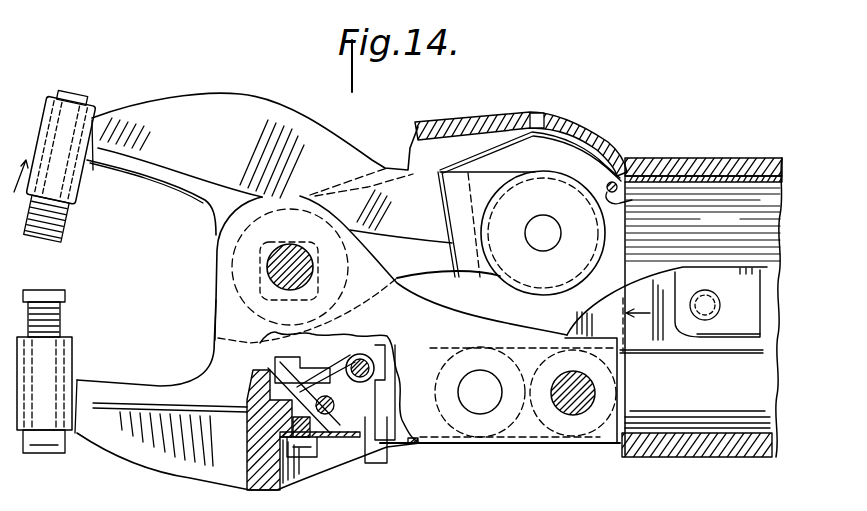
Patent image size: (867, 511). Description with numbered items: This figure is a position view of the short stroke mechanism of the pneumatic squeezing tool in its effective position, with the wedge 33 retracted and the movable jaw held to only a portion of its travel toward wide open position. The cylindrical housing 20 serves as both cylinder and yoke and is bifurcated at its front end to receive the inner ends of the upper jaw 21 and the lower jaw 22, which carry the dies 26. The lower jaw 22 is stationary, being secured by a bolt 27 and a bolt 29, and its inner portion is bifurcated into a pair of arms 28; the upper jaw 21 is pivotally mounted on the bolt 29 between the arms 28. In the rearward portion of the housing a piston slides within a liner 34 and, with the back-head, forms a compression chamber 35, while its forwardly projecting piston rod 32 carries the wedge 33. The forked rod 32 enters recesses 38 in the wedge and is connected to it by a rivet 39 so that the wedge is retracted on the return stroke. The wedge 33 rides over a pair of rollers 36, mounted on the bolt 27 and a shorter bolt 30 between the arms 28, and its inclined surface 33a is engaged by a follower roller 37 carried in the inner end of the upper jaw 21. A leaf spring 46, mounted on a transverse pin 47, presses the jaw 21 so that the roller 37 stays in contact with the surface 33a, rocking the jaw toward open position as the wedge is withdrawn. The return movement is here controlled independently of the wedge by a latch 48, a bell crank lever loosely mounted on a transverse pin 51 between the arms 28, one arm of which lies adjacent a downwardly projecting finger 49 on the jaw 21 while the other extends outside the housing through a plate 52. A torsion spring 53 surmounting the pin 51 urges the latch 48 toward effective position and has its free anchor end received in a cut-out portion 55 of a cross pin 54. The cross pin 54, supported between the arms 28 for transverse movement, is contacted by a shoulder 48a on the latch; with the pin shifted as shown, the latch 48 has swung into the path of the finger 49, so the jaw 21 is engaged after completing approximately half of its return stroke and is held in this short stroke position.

The cylindrical housing 20 is at (748, 163).
The upper jaw 21 is at (173, 107).
The lower jaw 22 is at (115, 385).
The dies 26 is at (65, 233).
The bolt 27 is at (572, 413).
The arms 28 is at (218, 318).
The bolt 29 is at (292, 248).
The bolt 30 is at (477, 410).
The piston rod 32 is at (750, 330).
The wedge 33 is at (668, 343).
The inclined surface 33a is at (630, 283).
The liner 34 is at (665, 177).
The compression chamber 35 is at (703, 224).
The rollers 36 is at (540, 362).
The roller 37 is at (563, 160).
The recesses 38 is at (756, 280).
The rivet 39 is at (707, 292).
The spring 46 is at (465, 157).
The transverse pin 47 is at (630, 195).
The latch 48 is at (380, 373).
The shoulder 48a is at (334, 400).
The finger 49 is at (308, 353).
The transverse pin 51 is at (360, 358).
The plate 52 is at (360, 463).
The torsion spring 53 is at (377, 367).
The cross pin 54 is at (330, 442).
The cut-out portion 55 is at (268, 425).